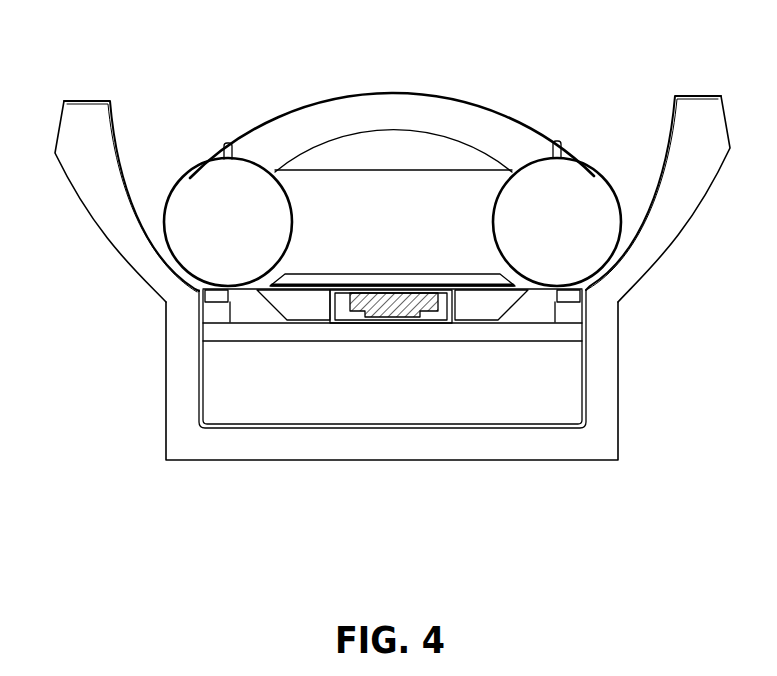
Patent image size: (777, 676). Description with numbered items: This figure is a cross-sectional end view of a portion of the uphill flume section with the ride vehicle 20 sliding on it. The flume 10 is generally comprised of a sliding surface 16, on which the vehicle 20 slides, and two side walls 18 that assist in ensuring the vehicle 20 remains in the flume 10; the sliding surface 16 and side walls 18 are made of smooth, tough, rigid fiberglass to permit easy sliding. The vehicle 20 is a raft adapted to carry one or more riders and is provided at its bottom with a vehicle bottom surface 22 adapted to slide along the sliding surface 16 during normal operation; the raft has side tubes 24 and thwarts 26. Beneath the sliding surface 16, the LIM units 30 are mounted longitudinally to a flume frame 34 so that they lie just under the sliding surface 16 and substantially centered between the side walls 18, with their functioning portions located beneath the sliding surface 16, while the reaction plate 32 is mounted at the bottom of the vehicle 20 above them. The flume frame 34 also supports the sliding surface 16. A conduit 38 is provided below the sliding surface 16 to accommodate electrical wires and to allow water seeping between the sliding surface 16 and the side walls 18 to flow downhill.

The flume 10 is at (143, 381).
The sliding surface 16 is at (212, 293).
The side walls 18 is at (107, 210).
The vehicle 20 is at (234, 100).
The vehicle bottom surface 22 is at (497, 287).
The side tubes 24 is at (208, 183).
The thwarts 26 is at (342, 195).
The LIM units 30 is at (398, 313).
The reaction plate 32 is at (407, 287).
The flume frame 34 is at (523, 341).
The conduit 38 is at (298, 410).